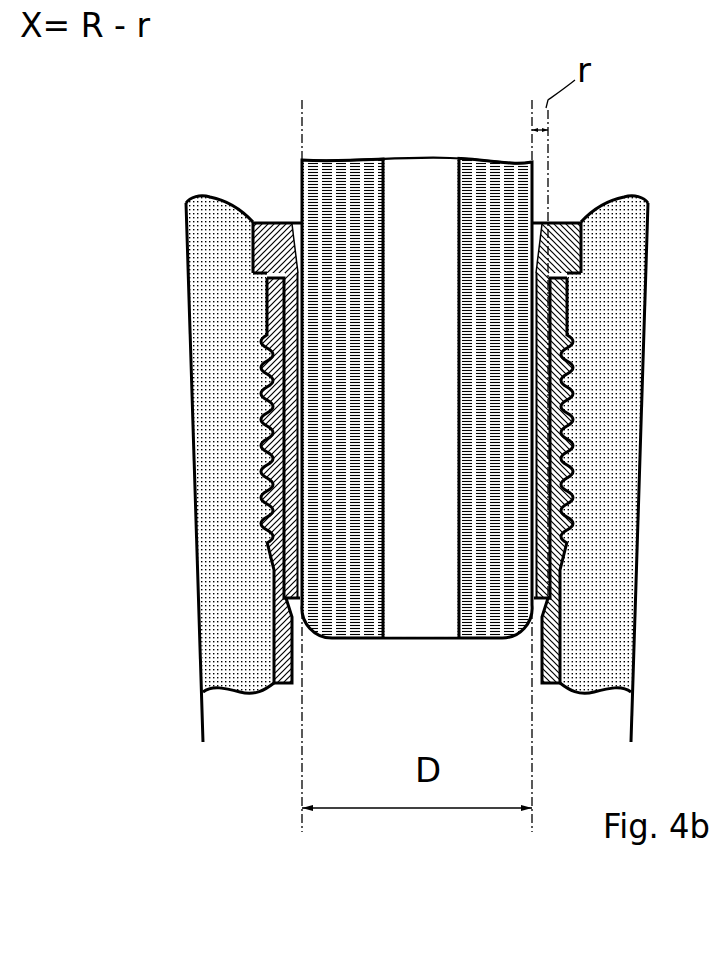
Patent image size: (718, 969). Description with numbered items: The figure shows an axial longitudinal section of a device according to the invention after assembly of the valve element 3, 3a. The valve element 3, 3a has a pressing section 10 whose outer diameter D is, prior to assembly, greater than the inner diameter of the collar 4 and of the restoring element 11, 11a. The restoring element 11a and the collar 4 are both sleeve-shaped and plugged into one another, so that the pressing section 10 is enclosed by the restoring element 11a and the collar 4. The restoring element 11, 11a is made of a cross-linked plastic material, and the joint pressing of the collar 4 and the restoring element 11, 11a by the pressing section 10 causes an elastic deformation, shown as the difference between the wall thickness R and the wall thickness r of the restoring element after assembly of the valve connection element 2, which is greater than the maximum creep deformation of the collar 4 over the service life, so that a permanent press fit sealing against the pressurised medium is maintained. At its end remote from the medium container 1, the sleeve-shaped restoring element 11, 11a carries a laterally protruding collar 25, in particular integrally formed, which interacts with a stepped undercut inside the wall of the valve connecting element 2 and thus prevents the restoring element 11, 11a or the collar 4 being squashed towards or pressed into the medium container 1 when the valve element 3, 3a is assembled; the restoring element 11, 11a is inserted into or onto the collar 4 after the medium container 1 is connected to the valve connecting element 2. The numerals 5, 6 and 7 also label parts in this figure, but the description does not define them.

The medium container 1 is at (335, 425).
The valve connecting element 2 is at (324, 469).
The valve element 3 is at (382, 328).
The valve element 3a is at (382, 328).
The pressing section 10 is at (344, 205).
The collar 4 is at (290, 458).
The housing part 5 is at (0, 590).
The housing part 6 is at (0, 652).
The housing wall 7 is at (240, 297).
The restoring element 11 is at (286, 480).
The restoring element 11a is at (286, 480).
The laterally protruding collar 25 is at (565, 240).